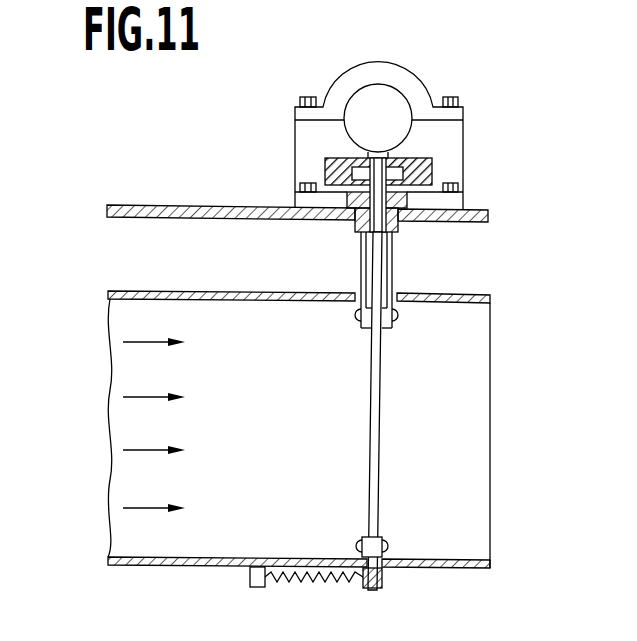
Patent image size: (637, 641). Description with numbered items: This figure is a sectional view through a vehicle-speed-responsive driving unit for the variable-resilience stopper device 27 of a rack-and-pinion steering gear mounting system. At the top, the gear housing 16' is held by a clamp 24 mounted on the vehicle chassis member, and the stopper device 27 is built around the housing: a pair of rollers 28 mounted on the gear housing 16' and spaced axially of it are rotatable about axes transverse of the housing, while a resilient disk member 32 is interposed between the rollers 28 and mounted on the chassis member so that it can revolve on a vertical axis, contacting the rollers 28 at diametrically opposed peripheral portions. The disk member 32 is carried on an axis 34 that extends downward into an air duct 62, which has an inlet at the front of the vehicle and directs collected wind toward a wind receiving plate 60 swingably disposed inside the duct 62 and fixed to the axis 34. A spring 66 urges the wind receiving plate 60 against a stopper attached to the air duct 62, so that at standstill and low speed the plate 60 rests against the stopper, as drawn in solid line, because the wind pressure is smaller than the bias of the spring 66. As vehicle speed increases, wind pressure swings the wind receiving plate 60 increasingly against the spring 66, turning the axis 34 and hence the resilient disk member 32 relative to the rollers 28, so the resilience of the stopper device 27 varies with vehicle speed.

The gear housing 16' is at (398, 99).
The variable-resilience stopper device 27 is at (436, 155).
The clamp 24 is at (453, 153).
The rollers 28 is at (325, 167).
The resilient disk member 32 is at (433, 170).
The axis 34 is at (384, 264).
The air duct 62 is at (490, 293).
The wind receiving plate 60 is at (380, 424).
The spring 66 is at (334, 584).